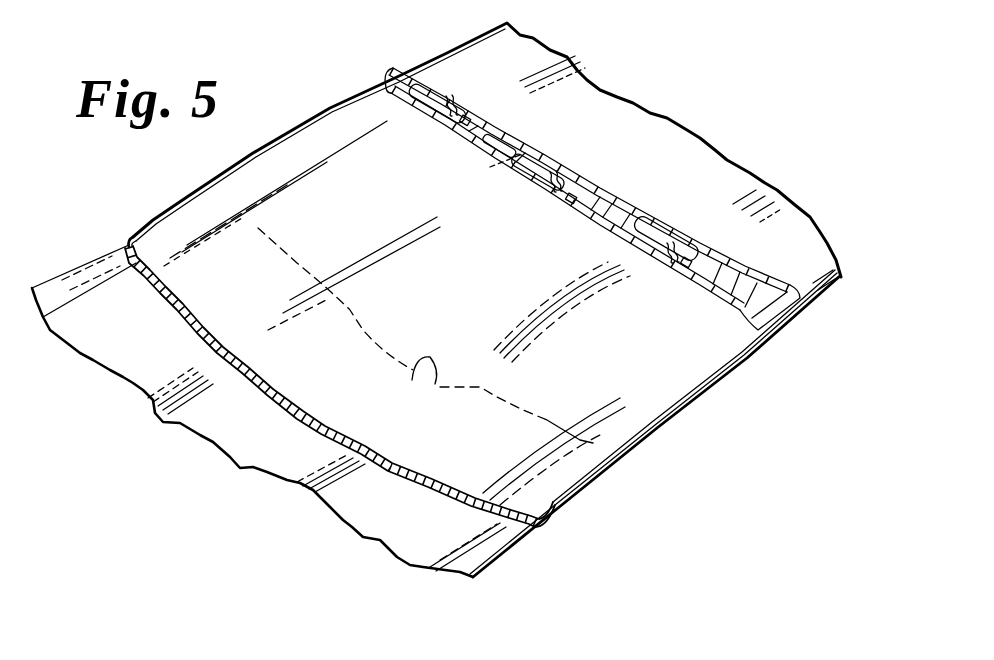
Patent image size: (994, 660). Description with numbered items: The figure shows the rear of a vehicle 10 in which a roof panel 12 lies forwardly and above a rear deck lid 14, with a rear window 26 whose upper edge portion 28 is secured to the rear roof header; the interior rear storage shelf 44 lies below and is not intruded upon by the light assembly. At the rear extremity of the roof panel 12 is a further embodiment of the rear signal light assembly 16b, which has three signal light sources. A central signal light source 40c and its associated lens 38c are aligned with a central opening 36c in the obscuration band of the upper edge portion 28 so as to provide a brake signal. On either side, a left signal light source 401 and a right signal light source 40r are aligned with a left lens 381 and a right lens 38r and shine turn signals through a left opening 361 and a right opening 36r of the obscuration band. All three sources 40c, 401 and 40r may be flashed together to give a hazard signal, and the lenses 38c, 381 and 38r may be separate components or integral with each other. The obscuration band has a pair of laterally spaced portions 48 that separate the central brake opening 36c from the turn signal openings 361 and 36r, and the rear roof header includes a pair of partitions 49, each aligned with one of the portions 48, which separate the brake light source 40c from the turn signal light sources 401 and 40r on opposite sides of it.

The vehicle 10 is at (760, 113).
The roof panel 12 is at (663, 128).
The rear deck lid 14 is at (162, 372).
The rear signal light assembly 16b is at (690, 216).
The rear window 26 is at (705, 358).
The upper edge portion 28 is at (827, 262).
The left turn signal opening 361 is at (400, 70).
The central brake signal opening 36c is at (547, 160).
The right turn signal opening 36r is at (737, 265).
The left lens 381 is at (447, 128).
The central lens 38c is at (560, 190).
The right lens 38r is at (668, 270).
The left signal light source 401 is at (468, 118).
The central signal light source 40c is at (578, 196).
The right signal light source 40r is at (684, 268).
The rear storage shelf 44 is at (412, 380).
The laterally spaced portions 48 is at (537, 150).
The partitions 49 is at (490, 167).